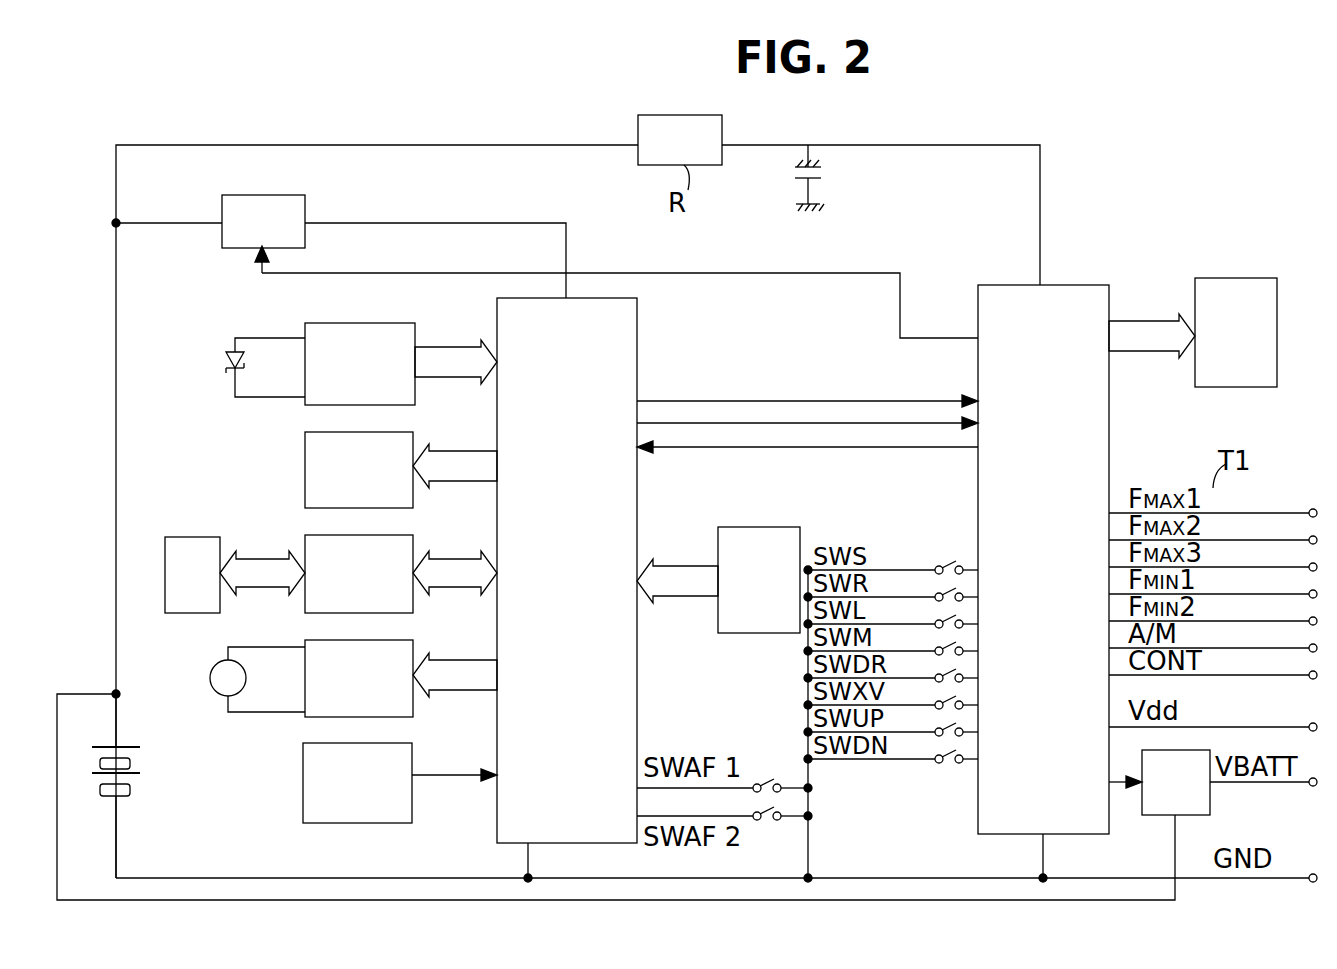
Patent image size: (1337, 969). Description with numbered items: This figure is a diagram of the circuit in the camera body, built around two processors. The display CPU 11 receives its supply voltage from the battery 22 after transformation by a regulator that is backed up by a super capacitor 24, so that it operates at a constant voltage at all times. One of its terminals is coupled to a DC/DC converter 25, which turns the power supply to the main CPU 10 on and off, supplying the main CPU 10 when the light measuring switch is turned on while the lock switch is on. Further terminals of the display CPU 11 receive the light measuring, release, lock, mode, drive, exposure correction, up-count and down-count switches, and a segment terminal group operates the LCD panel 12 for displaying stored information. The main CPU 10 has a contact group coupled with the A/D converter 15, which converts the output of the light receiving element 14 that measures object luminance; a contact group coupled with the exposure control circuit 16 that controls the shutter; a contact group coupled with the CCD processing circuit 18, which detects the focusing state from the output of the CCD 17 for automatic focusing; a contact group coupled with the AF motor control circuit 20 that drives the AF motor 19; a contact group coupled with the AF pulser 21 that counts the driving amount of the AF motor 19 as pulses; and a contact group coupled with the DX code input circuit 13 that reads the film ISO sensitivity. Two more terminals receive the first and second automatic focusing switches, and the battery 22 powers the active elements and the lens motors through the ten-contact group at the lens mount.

The main CPU 10 is at (637, 324).
The display CPU 11 is at (1083, 285).
The LCD panel 12 is at (1252, 278).
The DX code input circuit 13 is at (770, 527).
The light receiving element 14 is at (229, 363).
The A/D converter 15 is at (330, 323).
The exposure control circuit 16 is at (305, 458).
The CCD for automatic focusing 17 is at (180, 537).
The CCD processing circuit 18 is at (305, 543).
The AF motor 19 is at (212, 666).
The AF motor control circuit 20 is at (305, 717).
The AF pulser 21 is at (303, 778).
The battery 22 is at (137, 777).
The super capacitor 24 is at (790, 180).
The DC/DC converter 25 is at (305, 210).